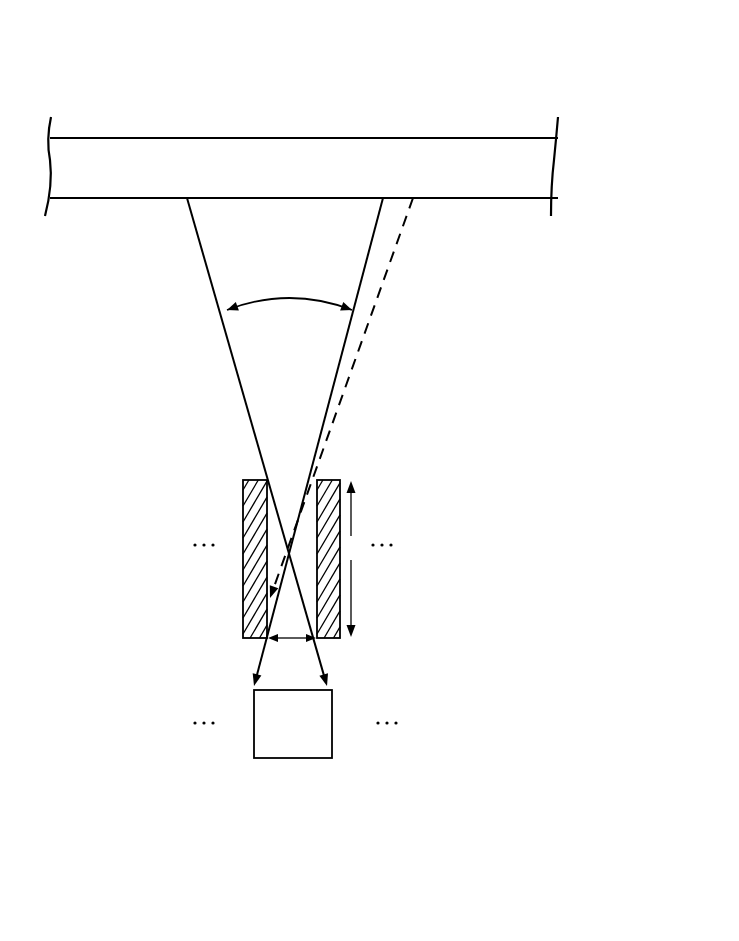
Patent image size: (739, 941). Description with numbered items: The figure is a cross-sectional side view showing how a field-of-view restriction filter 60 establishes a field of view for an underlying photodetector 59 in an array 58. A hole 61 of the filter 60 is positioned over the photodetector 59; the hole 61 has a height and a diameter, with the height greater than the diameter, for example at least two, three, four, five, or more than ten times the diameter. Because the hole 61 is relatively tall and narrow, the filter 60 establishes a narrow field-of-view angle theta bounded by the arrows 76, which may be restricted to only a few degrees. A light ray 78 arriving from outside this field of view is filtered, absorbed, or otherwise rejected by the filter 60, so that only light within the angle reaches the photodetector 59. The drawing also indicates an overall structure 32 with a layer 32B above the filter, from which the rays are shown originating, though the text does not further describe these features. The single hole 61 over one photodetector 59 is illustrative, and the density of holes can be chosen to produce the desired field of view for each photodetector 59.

The optical sensing system 32 is at (560, 81).
The reflective surface layer 32B is at (332, 138).
The arrows 76 is at (203, 234).
The light ray 78 is at (386, 276).
The hole 61 is at (292, 470).
The field-of-view restriction filter 60 is at (423, 482).
The array 58 is at (423, 692).
The photodetector 59 is at (294, 745).